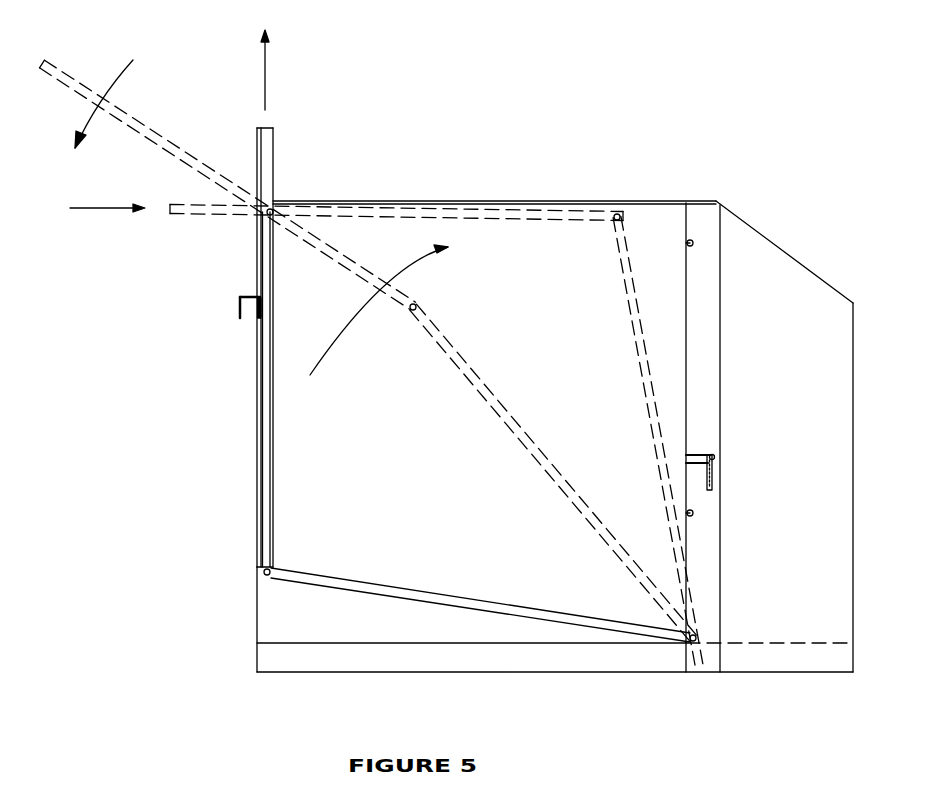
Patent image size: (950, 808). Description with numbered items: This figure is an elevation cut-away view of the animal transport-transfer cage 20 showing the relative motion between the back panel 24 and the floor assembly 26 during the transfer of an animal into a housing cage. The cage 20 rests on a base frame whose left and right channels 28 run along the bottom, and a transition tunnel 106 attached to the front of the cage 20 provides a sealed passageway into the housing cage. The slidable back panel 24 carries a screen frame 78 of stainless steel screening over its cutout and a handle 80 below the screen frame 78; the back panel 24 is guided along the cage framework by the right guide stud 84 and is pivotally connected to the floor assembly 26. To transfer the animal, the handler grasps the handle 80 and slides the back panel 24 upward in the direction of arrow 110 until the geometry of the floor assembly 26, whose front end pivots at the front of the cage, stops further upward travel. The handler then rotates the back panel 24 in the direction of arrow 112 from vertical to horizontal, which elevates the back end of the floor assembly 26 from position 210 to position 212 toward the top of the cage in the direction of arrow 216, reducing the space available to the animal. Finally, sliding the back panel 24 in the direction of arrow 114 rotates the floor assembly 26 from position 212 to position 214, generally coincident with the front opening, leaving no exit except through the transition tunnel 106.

The animal transport-transfer cage 20 is at (657, 192).
The back panel 24 is at (257, 405).
The floor assembly 26 is at (365, 583).
The left and right channels 28 is at (340, 660).
The screen frame 78 is at (258, 258).
The handle 80 is at (240, 312).
The right guide stud 84 is at (275, 207).
The transition tunnel 106 is at (774, 266).
The arrow 110 is at (265, 72).
The arrow 112 is at (133, 60).
The arrow 114 is at (103, 210).
The position 210 is at (273, 446).
The position 212 is at (445, 331).
The position 214 is at (627, 283).
The arrow 216 is at (413, 262).